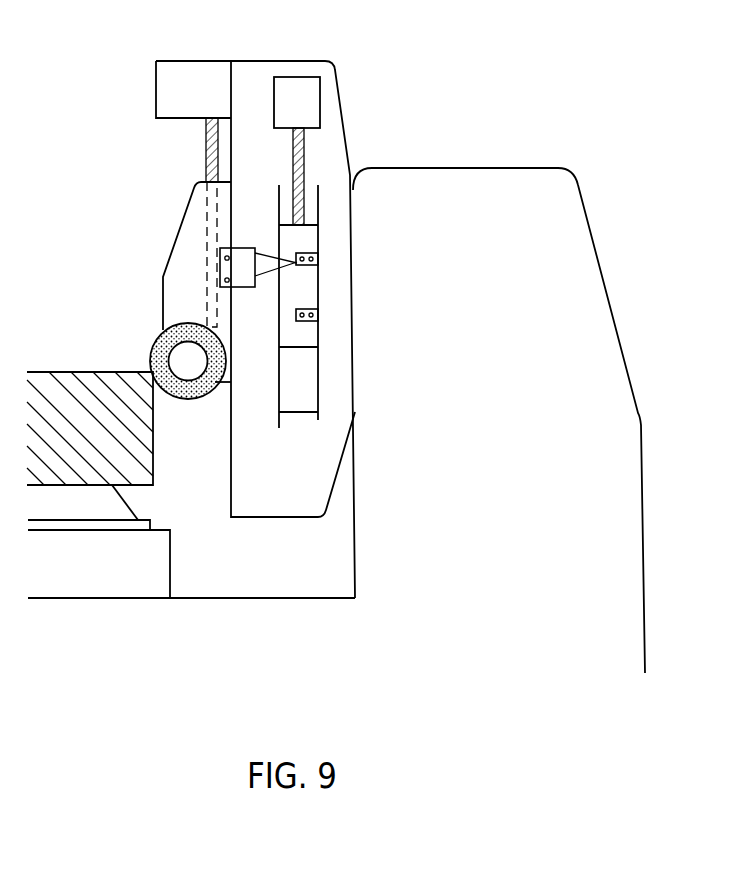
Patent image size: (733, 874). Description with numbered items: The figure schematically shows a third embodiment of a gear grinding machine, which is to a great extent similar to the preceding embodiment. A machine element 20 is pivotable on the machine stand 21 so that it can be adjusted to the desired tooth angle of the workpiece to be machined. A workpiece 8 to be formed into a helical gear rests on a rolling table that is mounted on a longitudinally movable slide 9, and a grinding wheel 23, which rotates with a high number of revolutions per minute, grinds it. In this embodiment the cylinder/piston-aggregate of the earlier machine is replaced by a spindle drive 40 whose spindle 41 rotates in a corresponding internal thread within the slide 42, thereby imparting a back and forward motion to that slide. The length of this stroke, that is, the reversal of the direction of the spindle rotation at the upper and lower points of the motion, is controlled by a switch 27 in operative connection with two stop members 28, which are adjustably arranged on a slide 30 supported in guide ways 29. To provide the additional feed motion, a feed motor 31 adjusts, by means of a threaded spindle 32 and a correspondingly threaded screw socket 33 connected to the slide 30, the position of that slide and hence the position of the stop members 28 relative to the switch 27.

The workpiece 8 is at (67, 397).
The slide 9 is at (148, 576).
The machine element 20 is at (297, 485).
The machine stand 21 is at (593, 342).
The grinding wheel 23 is at (190, 397).
The switch 27 is at (220, 270).
The stop members 28 is at (320, 258).
The guide ways 29 is at (320, 395).
The slide 30 is at (303, 337).
The feed motor 31 is at (300, 95).
The threaded spindle 32 is at (304, 142).
The screw socket 33 is at (304, 180).
The spindle drive 40 is at (203, 85).
The screw 41 is at (205, 152).
The slide 42 is at (192, 231).